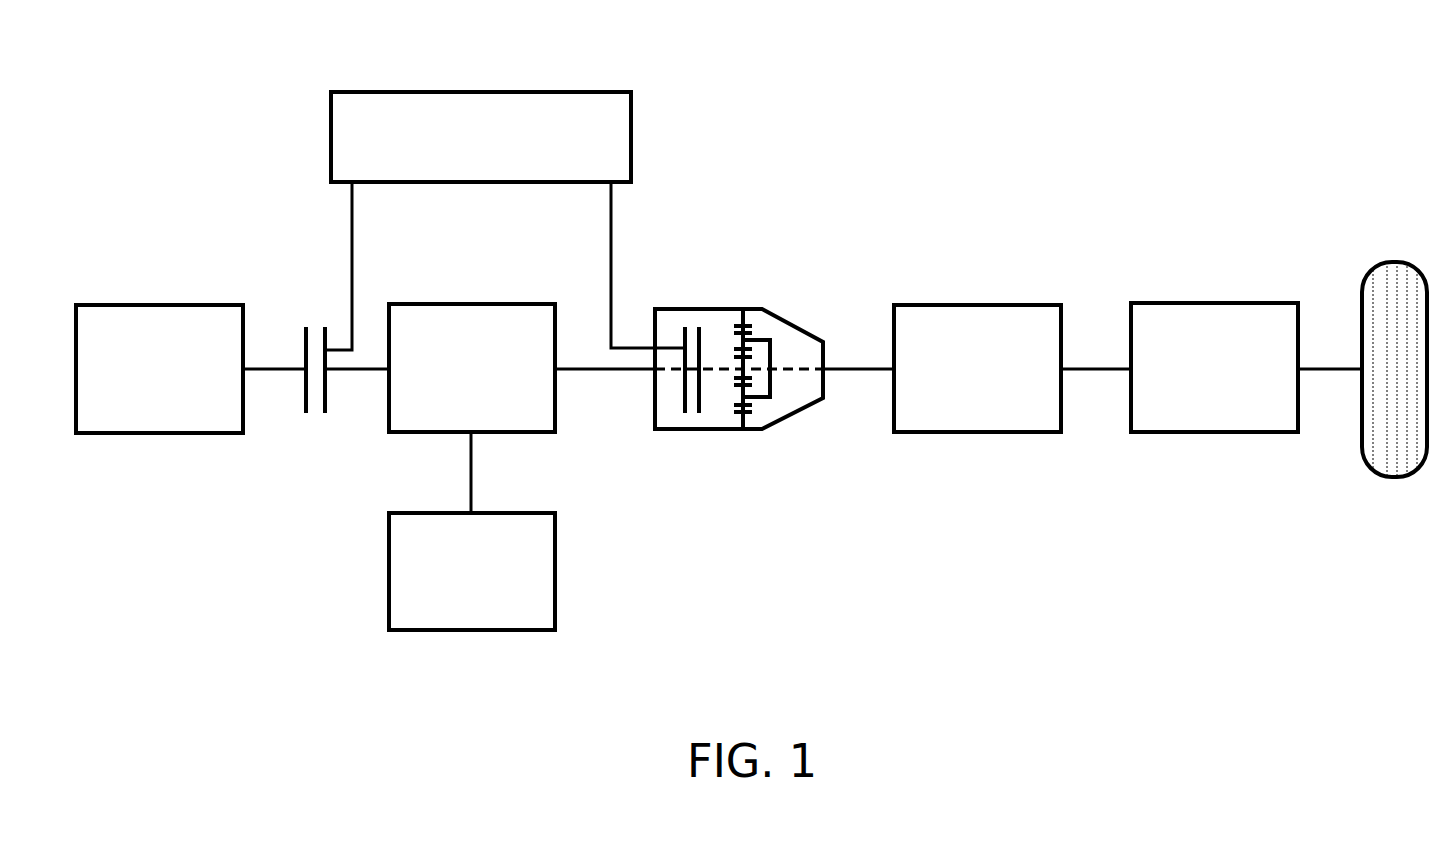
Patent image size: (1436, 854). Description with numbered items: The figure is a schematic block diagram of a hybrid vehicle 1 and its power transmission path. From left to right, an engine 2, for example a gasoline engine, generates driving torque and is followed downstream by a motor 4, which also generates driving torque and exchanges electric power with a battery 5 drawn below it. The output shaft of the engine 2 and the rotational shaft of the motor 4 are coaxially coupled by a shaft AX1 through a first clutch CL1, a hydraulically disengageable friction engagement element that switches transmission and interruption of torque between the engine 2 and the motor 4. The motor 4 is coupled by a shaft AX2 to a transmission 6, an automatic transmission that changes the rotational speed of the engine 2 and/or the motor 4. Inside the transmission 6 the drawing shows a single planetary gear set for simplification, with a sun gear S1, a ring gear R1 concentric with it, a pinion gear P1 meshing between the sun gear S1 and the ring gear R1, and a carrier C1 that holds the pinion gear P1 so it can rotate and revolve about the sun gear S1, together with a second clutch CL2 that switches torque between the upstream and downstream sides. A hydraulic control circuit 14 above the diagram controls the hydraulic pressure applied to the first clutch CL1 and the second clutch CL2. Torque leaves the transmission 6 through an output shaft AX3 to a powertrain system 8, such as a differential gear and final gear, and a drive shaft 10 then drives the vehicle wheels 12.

The hybrid vehicle 1 is at (850, 167).
The engine 2 is at (160, 305).
The motor 4 is at (468, 304).
The battery 5 is at (476, 631).
The transmission 6 is at (756, 430).
The powertrain system 8 is at (967, 305).
The drive shaft 10 is at (1218, 303).
The vehicle wheels 12 is at (1393, 262).
The hydraulic control circuit 14 is at (480, 92).
The shaft AX1 is at (272, 369).
The shaft AX2 is at (588, 369).
The output shaft AX3 is at (862, 368).
The first clutch CL1 is at (306, 398).
The second clutch CL2 is at (680, 400).
The pinion gear P1 is at (741, 346).
The ring gear R1 is at (742, 318).
The sun gear S1 is at (740, 378).
The carrier C1 is at (771, 354).